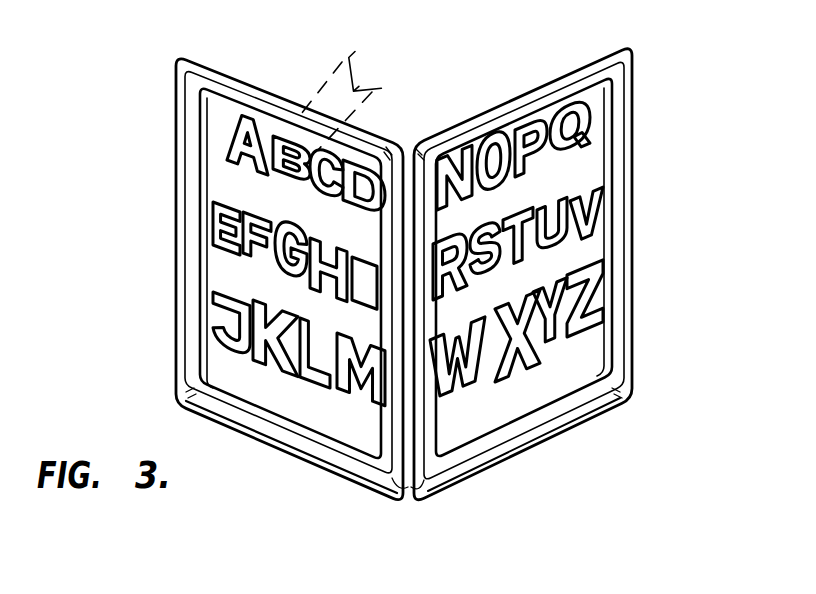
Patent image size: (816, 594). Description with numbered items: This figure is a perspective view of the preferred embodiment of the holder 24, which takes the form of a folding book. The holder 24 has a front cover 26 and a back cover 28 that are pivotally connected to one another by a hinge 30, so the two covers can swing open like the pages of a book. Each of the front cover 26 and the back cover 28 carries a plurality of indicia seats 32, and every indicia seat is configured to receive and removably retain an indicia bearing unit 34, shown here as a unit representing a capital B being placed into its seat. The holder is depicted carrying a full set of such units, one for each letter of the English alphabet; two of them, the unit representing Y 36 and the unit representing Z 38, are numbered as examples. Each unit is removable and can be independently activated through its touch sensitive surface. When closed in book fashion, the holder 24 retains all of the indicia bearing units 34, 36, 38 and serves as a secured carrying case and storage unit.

The holder 24 is at (431, 268).
The front cover 26 is at (260, 260).
The back cover 28 is at (557, 274).
The hinge 30 is at (407, 424).
The indicia seat 32 is at (284, 134).
The indicia bearing unit 34 is at (381, 53).
The indicia bearing unit "Y" 36 is at (565, 278).
The indicia bearing unit "Z" 38 is at (601, 289).